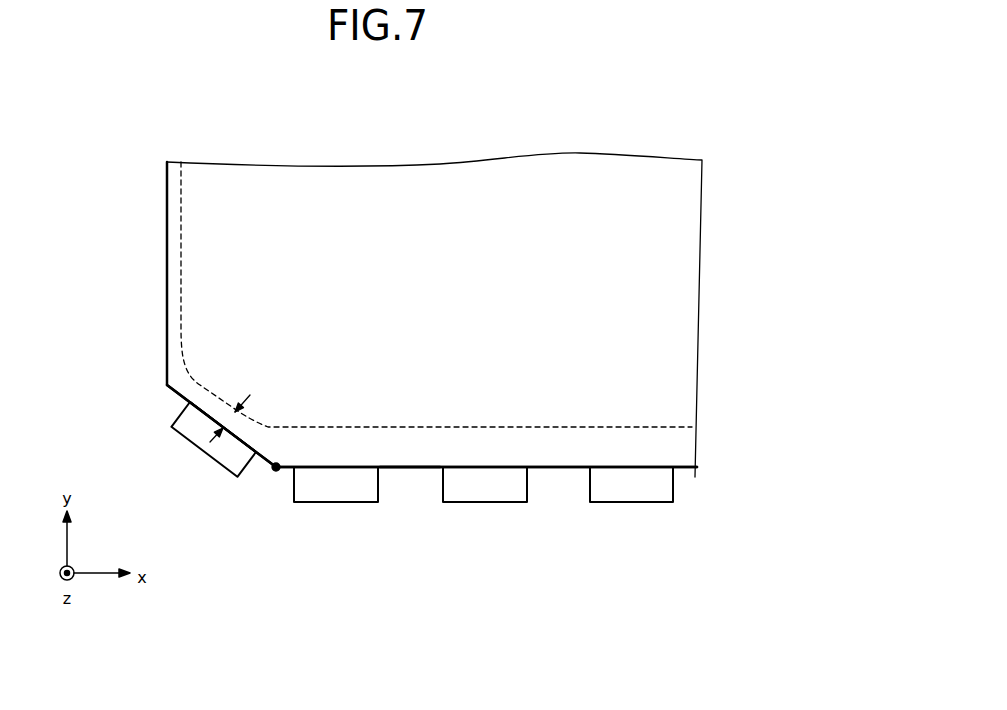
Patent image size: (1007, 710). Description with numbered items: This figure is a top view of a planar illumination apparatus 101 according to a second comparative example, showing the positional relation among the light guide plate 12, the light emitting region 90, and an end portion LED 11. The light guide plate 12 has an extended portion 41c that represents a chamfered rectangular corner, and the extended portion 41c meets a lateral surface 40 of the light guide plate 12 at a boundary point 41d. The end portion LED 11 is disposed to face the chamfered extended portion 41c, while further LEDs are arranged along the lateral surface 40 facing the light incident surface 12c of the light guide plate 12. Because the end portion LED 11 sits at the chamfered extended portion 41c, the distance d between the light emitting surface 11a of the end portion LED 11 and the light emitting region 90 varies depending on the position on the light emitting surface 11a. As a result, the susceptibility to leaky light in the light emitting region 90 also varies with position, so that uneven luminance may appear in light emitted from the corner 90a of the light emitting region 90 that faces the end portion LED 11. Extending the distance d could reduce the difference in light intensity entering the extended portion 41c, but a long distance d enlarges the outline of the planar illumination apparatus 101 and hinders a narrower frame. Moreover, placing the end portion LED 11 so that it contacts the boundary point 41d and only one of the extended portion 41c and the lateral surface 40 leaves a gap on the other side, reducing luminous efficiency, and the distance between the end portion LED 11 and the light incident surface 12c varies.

The planar illumination apparatus 101 is at (598, 128).
The light emitting region 90 is at (440, 197).
The corner of the light emitting region 90a is at (183, 377).
The light guide plate 12 is at (683, 457).
The light incident surface 12c is at (456, 607).
The lateral surface 40 is at (413, 468).
The extended portion 41c is at (262, 462).
The boundary point 41d is at (275, 471).
The end portion LED 11 is at (232, 457).
The light emitting surface 11a is at (229, 420).
The distance d is at (214, 430).